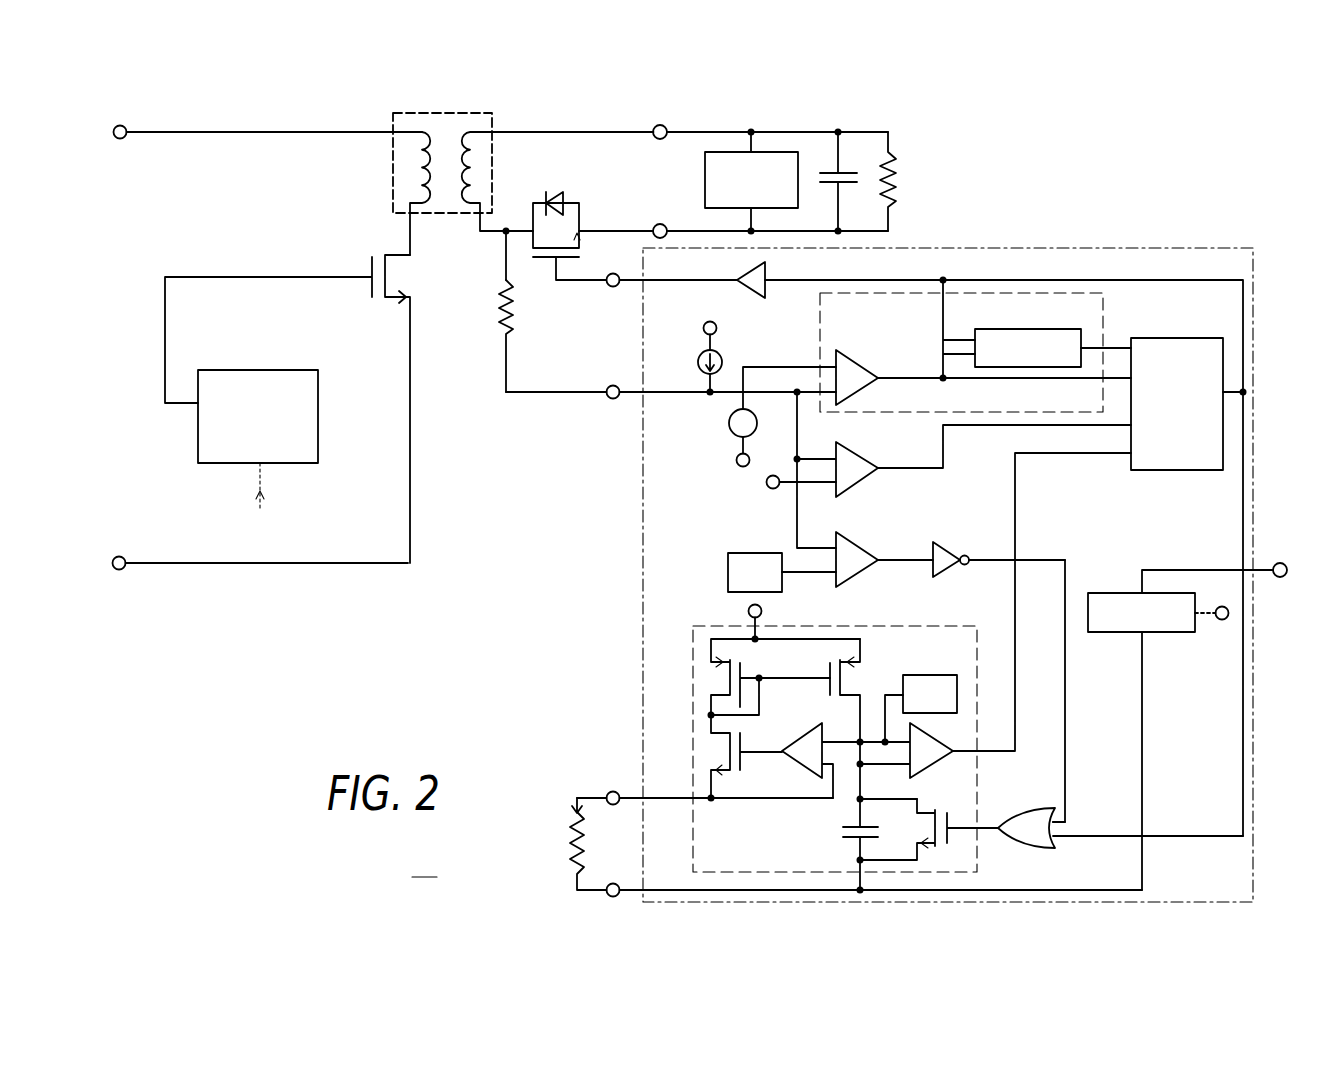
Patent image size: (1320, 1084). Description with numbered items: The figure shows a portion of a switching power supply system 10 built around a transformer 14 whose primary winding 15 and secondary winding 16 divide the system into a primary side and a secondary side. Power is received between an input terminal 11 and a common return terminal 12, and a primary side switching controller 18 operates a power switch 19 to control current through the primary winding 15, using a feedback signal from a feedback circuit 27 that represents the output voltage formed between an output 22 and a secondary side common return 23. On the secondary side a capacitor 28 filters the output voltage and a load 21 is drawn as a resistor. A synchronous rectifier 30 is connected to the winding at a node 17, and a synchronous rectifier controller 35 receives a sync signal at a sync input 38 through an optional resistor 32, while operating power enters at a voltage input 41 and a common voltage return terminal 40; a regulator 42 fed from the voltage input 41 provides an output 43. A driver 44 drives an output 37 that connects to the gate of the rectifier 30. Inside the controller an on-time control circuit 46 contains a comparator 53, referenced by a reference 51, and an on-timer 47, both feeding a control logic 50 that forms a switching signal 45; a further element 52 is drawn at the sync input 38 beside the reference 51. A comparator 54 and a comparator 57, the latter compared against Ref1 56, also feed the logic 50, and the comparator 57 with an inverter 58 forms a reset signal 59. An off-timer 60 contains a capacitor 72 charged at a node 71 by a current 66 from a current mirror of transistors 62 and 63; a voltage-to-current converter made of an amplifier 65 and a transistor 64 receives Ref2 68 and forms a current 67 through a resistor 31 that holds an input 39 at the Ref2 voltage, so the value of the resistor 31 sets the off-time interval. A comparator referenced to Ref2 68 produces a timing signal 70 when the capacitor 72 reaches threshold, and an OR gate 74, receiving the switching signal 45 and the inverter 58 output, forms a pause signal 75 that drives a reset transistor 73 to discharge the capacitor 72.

The switching power supply system 10 is at (424, 866).
The input terminal 11 is at (124, 138).
The common return terminal 12 is at (123, 569).
The transformer 14 is at (403, 113).
The primary winding 15 is at (422, 176).
The secondary winding 16 is at (463, 160).
The node 17 is at (506, 226).
The primary side switching controller 18 is at (235, 370).
The primary side power switch 19 is at (372, 266).
The load 21 is at (897, 160).
The output 22 is at (665, 126).
The secondary side common return 23 is at (660, 224).
The feedback circuit 27 is at (705, 175).
The capacitor 28 is at (848, 173).
The synchronous rectifier 30 is at (580, 210).
The resistor 31 is at (570, 860).
The optional resistor 32 is at (500, 307).
The synchronous rectifier controller 35 is at (643, 562).
The output 37 is at (608, 287).
The sync input 38 is at (608, 398).
The input 39 is at (607, 792).
The common voltage return terminal 40 is at (740, 466).
The voltage input 41 is at (1282, 562).
The regulator 42 is at (1125, 632).
The output of regulator 43 is at (716, 332).
The driver 44 is at (745, 277).
The switching signal 45 is at (808, 280).
The on-time control circuit 46 is at (820, 312).
The on-timer 47 is at (1027, 329).
The control logic 50 is at (1187, 338).
The reference 51 is at (729, 421).
The current source 52 is at (700, 365).
The comparator 53 is at (871, 358).
The comparator 54 is at (855, 485).
The Ref1 56 is at (752, 553).
The comparator 57 is at (862, 575).
The inverter 58 is at (950, 570).
The reset signal 59 is at (1066, 760).
The off-timer 60 is at (917, 626).
The transistor 62 is at (828, 688).
The transistor 63 is at (742, 672).
The transistor 64 is at (743, 748).
The amplifier 65 is at (808, 768).
The current 66 is at (865, 772).
The current 67 is at (570, 809).
The Ref2 68 is at (918, 675).
The timing signal 70 is at (1017, 746).
The node 71 is at (858, 802).
The capacitor 72 is at (858, 840).
The reset transistor 73 is at (948, 838).
The OR gate 74 is at (1040, 847).
The pause signal 75 is at (984, 826).